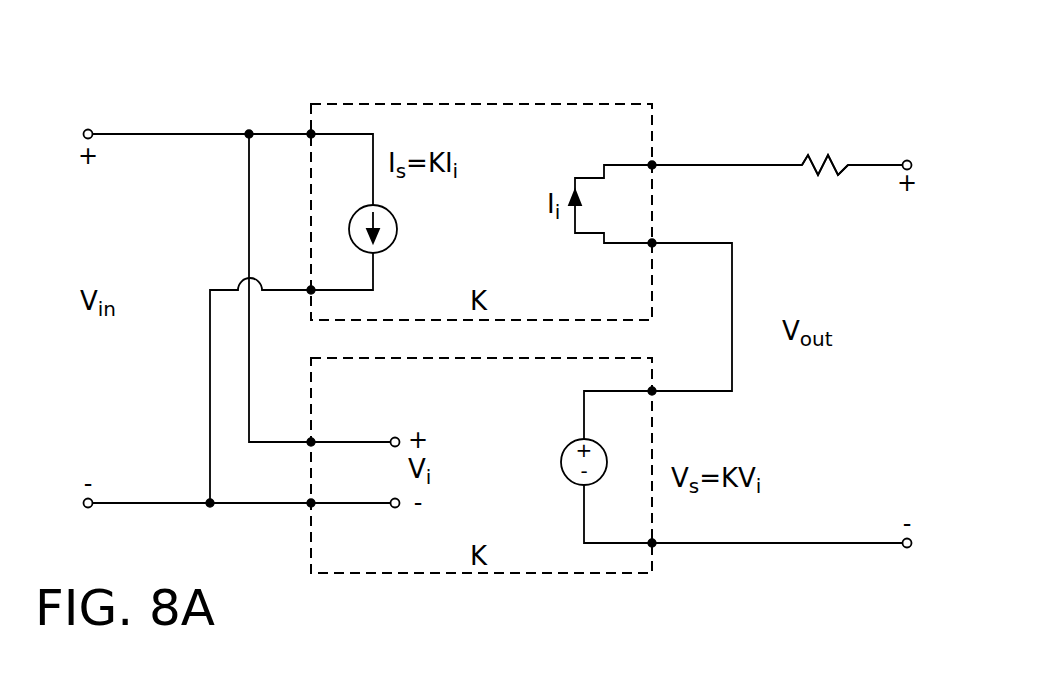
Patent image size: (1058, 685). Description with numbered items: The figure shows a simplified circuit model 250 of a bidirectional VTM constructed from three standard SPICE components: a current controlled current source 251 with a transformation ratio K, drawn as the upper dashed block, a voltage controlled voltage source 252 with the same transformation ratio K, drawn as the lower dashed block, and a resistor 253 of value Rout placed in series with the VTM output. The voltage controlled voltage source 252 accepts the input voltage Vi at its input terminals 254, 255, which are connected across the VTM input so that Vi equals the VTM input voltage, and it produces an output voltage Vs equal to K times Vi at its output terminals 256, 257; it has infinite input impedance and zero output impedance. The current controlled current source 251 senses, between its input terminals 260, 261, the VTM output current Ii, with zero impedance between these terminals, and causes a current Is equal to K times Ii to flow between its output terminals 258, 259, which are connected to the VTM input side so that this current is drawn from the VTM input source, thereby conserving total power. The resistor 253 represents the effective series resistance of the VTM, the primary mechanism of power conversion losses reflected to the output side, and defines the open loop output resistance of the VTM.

The simplified circuit model 250 is at (647, 44).
The current controlled current source 251 is at (508, 104).
The voltage controlled voltage source 252 is at (527, 573).
The resistor 253 is at (820, 173).
The VCVS input terminal 254 is at (284, 457).
The VCVS input terminal 255 is at (260, 519).
The VCVS output terminal 256 is at (686, 407).
The VCVS output terminal 257 is at (686, 528).
The CCCS output terminal 258 is at (280, 117).
The CCCS output terminal 259 is at (287, 271).
The CCCS input terminal 260 is at (683, 151).
The CCCS input terminal 261 is at (683, 229).